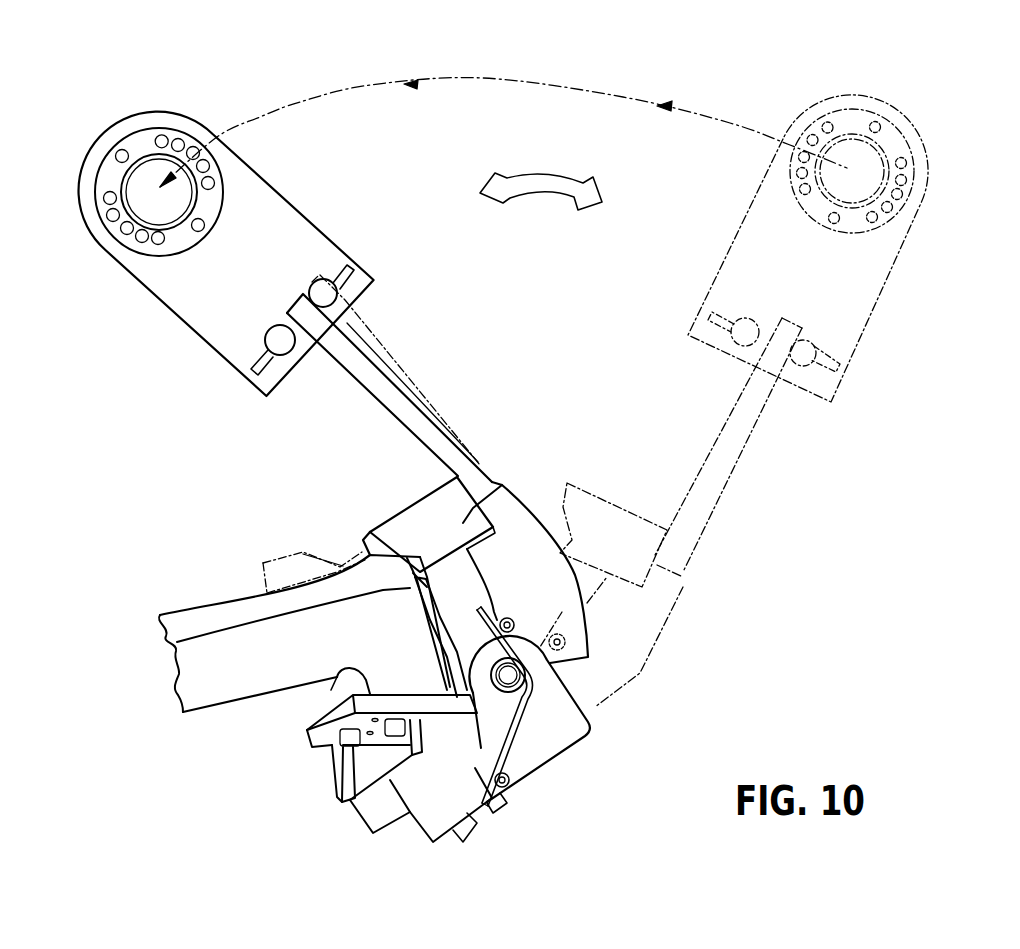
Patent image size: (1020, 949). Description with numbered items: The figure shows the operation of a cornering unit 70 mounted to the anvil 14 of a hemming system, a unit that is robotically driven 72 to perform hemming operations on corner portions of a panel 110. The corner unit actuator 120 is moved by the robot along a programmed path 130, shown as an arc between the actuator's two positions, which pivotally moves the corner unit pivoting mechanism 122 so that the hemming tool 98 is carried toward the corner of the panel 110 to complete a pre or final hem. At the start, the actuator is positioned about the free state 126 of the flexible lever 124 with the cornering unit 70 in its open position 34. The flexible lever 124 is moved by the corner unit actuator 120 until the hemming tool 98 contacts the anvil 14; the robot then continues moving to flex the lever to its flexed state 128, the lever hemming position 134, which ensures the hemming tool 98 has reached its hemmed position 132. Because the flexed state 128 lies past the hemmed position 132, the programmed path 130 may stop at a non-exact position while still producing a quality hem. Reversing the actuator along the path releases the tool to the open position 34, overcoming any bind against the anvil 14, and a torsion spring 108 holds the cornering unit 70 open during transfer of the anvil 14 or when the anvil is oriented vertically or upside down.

The anvil 14 is at (217, 603).
The open position 34 is at (683, 587).
The cornering unit 70 is at (540, 421).
The robotic drive 72 is at (553, 172).
The hemming tool 98 is at (372, 528).
The torsion spring 108 is at (517, 718).
The panel 110 is at (350, 553).
The corner unit actuator 120 is at (177, 317).
The corner unit pivoting mechanism 122 is at (762, 510).
The flexible lever 124 is at (347, 322).
The free state 126 is at (740, 420).
The flexed state 128 is at (362, 392).
The programmed path 130 is at (487, 78).
The hemmed position 132 is at (360, 542).
The lever hemming position 134 is at (303, 338).